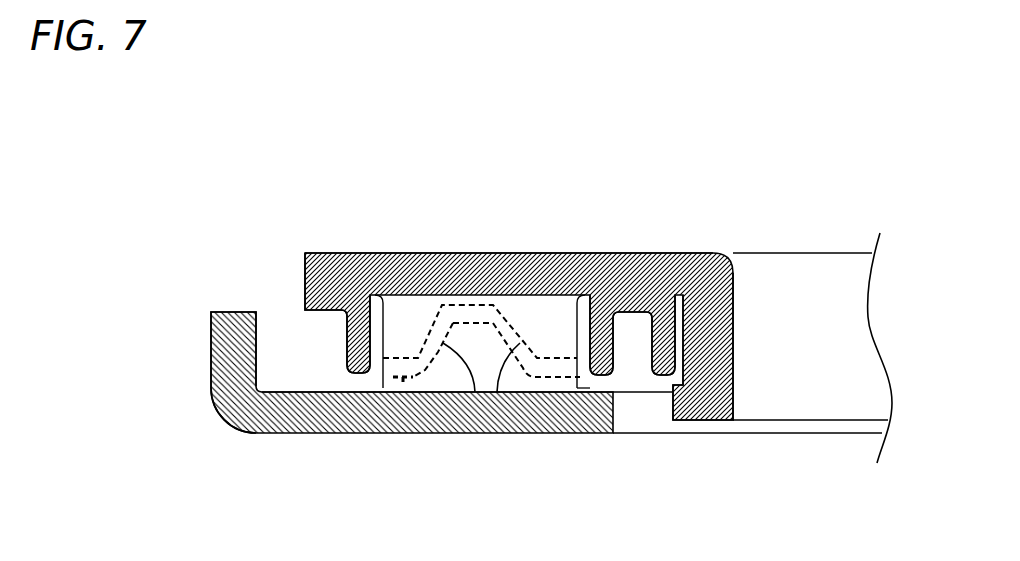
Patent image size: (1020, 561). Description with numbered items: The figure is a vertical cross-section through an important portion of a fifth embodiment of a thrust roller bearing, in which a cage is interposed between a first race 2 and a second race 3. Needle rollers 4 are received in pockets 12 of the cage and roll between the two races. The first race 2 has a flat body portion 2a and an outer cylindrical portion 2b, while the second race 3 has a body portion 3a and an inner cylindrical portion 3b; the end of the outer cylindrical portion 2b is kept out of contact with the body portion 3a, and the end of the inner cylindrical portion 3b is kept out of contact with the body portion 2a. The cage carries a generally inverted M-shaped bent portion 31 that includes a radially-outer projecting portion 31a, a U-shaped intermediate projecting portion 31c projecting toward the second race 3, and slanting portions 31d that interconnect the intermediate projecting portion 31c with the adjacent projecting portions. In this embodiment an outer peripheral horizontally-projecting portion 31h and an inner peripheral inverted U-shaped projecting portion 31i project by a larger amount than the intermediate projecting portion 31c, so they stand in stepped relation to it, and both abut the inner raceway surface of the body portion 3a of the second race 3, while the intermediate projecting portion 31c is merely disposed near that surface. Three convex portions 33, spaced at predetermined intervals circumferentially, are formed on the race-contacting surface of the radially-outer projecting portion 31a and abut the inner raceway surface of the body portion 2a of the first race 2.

The first race 2 is at (447, 418).
The body portion of the first race 2a is at (530, 410).
The outer cylindrical portion of the first race 2b is at (210, 368).
The second race 3 is at (463, 253).
The body portion of the second race 3a is at (563, 253).
The inner cylindrical portion of the second race 3b is at (733, 383).
The needle roller 4 is at (403, 312).
The pocket 12 is at (595, 378).
The generally inverted M-shaped bent portion 31 is at (432, 308).
The radially-outer projecting portion 31a is at (417, 378).
The intermediate projecting portion 31c is at (494, 304).
The slanting portion 31d is at (497, 392).
The outer peripheral horizontally-projecting portion 31h is at (305, 300).
The inner peripheral inverted U-shaped projecting portion 31i is at (663, 297).
The convex portion 33 is at (388, 382).